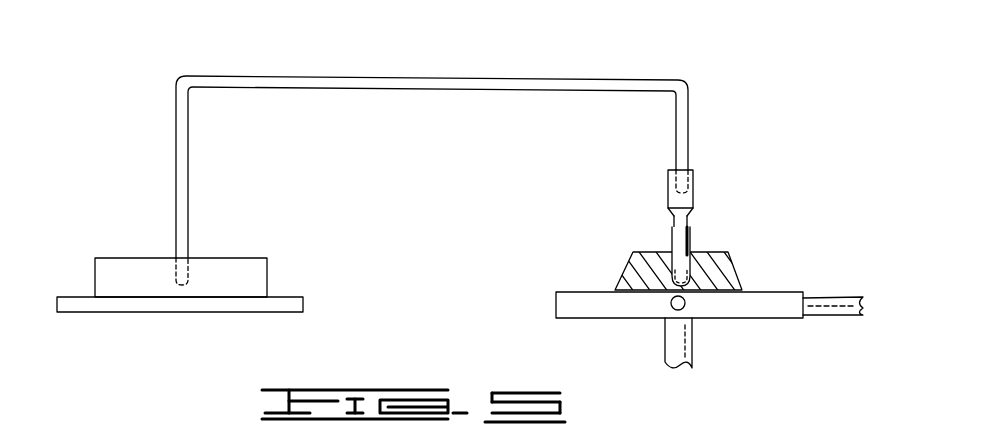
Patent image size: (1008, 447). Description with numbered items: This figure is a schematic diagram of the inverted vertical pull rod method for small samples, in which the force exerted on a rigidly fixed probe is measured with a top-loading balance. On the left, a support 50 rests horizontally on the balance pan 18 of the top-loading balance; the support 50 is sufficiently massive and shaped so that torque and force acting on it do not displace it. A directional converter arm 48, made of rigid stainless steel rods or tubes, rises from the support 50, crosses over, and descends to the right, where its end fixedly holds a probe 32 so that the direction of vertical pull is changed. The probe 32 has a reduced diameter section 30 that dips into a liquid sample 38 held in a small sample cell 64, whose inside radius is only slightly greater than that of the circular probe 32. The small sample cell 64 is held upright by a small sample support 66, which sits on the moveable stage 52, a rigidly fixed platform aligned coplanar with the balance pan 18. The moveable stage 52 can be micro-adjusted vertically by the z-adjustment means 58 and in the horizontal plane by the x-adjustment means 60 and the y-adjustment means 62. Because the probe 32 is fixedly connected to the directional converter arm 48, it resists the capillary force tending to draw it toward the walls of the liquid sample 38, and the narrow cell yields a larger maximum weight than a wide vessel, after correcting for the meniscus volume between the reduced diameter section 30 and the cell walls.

The directional converter arm 48 is at (477, 80).
The support 50 is at (137, 258).
The balance pan 18 is at (283, 297).
The probe 32 is at (668, 180).
The reduced diameter section 30 is at (674, 220).
The small sample cell 64 is at (690, 240).
The liquid sample 38 is at (690, 263).
The small sample support 66 is at (621, 282).
The moveable stage 52 is at (555, 293).
The y-adjustment means 62 is at (670, 305).
The z-adjustment means 58 is at (690, 343).
The x-adjustment means 60 is at (828, 300).